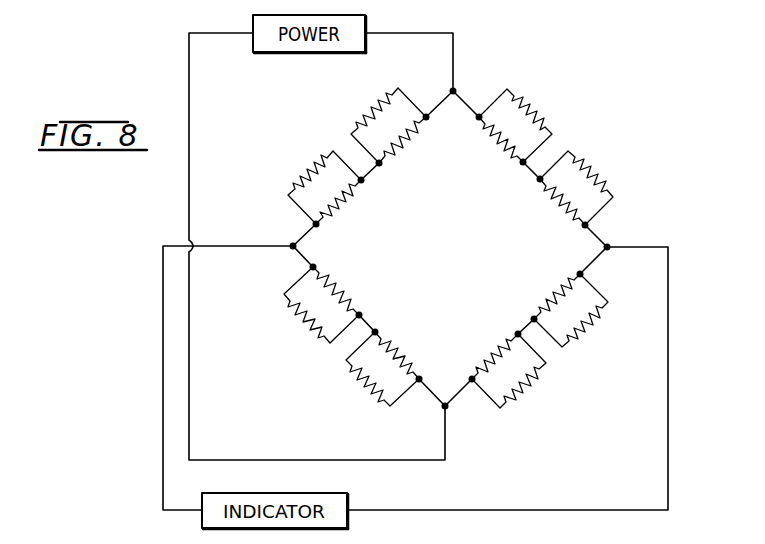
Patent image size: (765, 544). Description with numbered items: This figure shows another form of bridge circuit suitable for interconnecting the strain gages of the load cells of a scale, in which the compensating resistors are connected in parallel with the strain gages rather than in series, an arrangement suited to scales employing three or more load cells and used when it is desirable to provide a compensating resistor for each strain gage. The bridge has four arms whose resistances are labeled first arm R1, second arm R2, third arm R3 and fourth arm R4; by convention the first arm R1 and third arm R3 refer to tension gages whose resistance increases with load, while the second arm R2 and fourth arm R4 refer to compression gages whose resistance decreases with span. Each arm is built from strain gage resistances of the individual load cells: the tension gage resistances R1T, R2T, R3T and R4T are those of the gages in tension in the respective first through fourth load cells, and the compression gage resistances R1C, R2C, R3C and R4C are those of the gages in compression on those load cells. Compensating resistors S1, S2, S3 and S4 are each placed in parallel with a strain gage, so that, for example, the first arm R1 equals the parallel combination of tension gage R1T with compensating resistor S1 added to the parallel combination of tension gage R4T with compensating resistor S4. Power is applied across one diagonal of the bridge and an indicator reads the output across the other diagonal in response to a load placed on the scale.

The first bridge arm resistance R1 is at (384, 61).
The second bridge arm resistance R2 is at (644, 181).
The third bridge arm resistance R3 is at (633, 308).
The fourth bridge arm resistance R4 is at (384, 433).
The compensating resistor S1 is at (455, 124).
The compensating resistor S2 is at (578, 249).
The compensating resistor S3 is at (444, 370).
The compensating resistor S4 is at (320, 245).
The tension strain gage resistance R1T is at (407, 143).
The compression strain gage resistance R1C is at (493, 143).
The tension strain gage resistance R2T is at (548, 293).
The compression strain gage resistance R2C is at (551, 203).
The tension strain gage resistance R3T is at (490, 355).
The compression strain gage resistance R3C is at (404, 354).
The tension strain gage resistance R4T is at (349, 202).
The compression strain gage resistance R4C is at (347, 291).